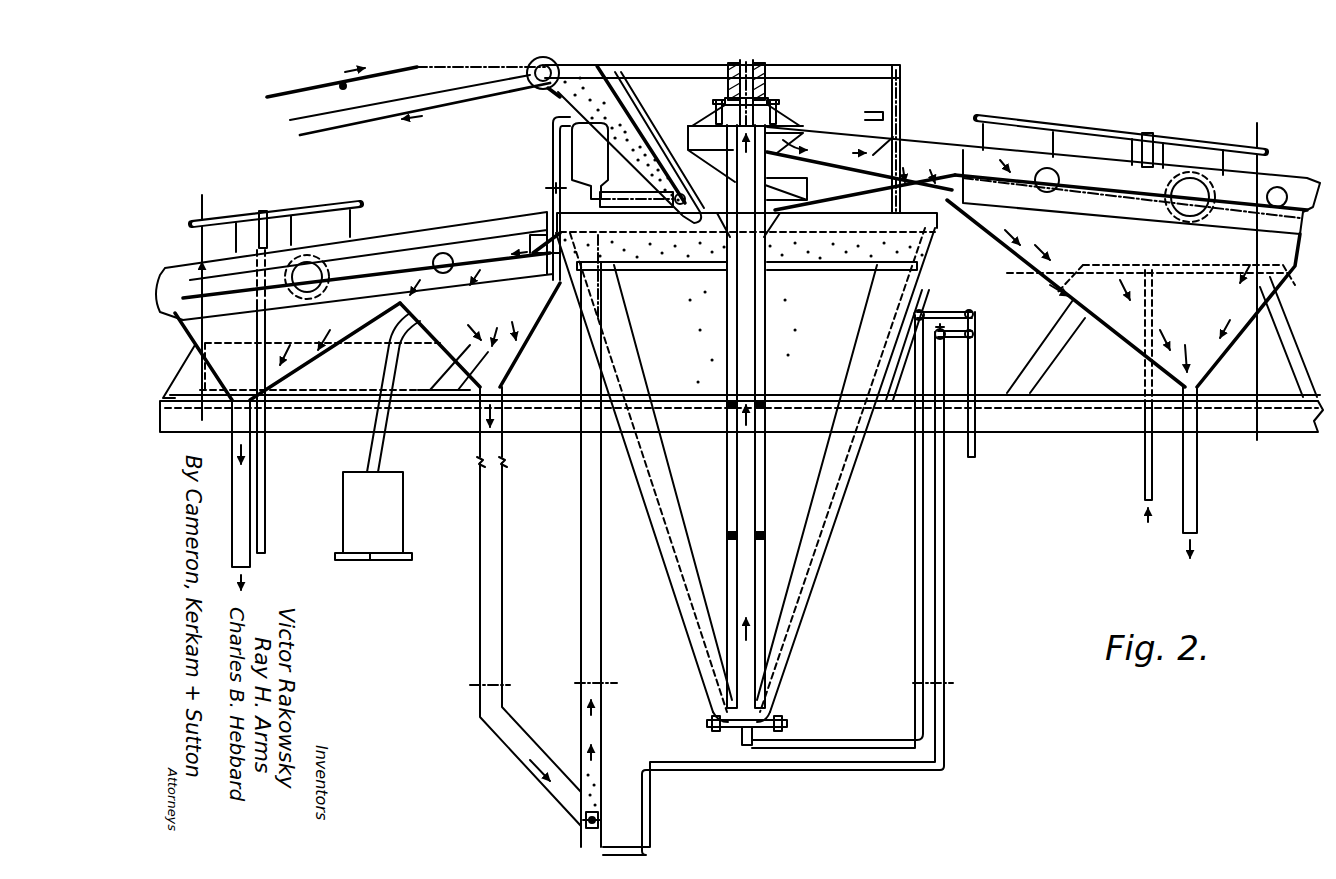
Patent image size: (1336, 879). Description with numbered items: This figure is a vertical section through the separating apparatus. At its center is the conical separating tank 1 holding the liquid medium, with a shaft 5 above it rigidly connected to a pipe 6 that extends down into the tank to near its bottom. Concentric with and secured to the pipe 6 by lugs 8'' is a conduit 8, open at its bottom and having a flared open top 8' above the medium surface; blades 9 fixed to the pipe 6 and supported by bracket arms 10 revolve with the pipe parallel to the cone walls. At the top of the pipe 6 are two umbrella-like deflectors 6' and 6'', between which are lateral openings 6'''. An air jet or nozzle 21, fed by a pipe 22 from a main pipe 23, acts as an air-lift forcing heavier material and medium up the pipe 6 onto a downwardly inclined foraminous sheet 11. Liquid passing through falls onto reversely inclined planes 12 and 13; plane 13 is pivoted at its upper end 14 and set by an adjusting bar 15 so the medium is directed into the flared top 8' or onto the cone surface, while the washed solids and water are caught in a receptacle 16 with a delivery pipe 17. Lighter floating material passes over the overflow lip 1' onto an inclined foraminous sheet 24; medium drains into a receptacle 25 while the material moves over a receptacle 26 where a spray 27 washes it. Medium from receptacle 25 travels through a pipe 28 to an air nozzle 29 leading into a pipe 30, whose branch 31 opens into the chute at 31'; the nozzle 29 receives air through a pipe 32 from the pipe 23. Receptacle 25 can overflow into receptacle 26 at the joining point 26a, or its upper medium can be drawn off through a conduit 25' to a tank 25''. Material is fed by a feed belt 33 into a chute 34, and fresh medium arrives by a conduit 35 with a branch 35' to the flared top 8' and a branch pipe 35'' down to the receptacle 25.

The separating tank 1 is at (745, 475).
The overflow lip or channel 1' is at (724, 224).
The shaft 5 is at (727, 79).
The pipe 6 is at (755, 402).
The upper deflector 6' is at (747, 111).
The lower deflector 6'' is at (777, 154).
The lateral openings 6''' is at (733, 103).
The conduit 8 is at (774, 350).
The flared open top 8' is at (760, 225).
The lugs 8'' is at (744, 457).
The blades 9 is at (641, 370).
The bracket arms 10 is at (693, 272).
The foraminous sheet 11 is at (1100, 207).
The inclined plane or trough 12 is at (784, 171).
The inclined plane or trough 13 is at (848, 205).
The pivot point 14 is at (1043, 176).
The adjusting bar 15 is at (903, 141).
The receptacle 16 is at (1062, 281).
The delivery pipe 17 is at (1199, 459).
The air jet or nozzle 21 is at (737, 729).
The pipe 22 is at (916, 482).
The main pipe 23 is at (975, 454).
The inclined foraminous sheet 24 is at (482, 275).
The receptacle 25 is at (480, 370).
The conduit 25' is at (398, 392).
The tank or receptacle 25'' is at (389, 516).
The receptacle 26 is at (308, 364).
The joining point 26a is at (433, 260).
The spray 27 is at (322, 210).
The pipe 28 is at (483, 597).
The air nozzle or jet 29 is at (586, 822).
The pipe 30 is at (587, 593).
The branch 31 is at (622, 165).
The branch opening 31' is at (666, 212).
The pipe 32 is at (833, 767).
The feed belt 33 is at (343, 86).
The chute 34 is at (553, 97).
The conduit 35 is at (621, 139).
The branch 35' is at (659, 147).
The branch pipe 35'' is at (540, 198).